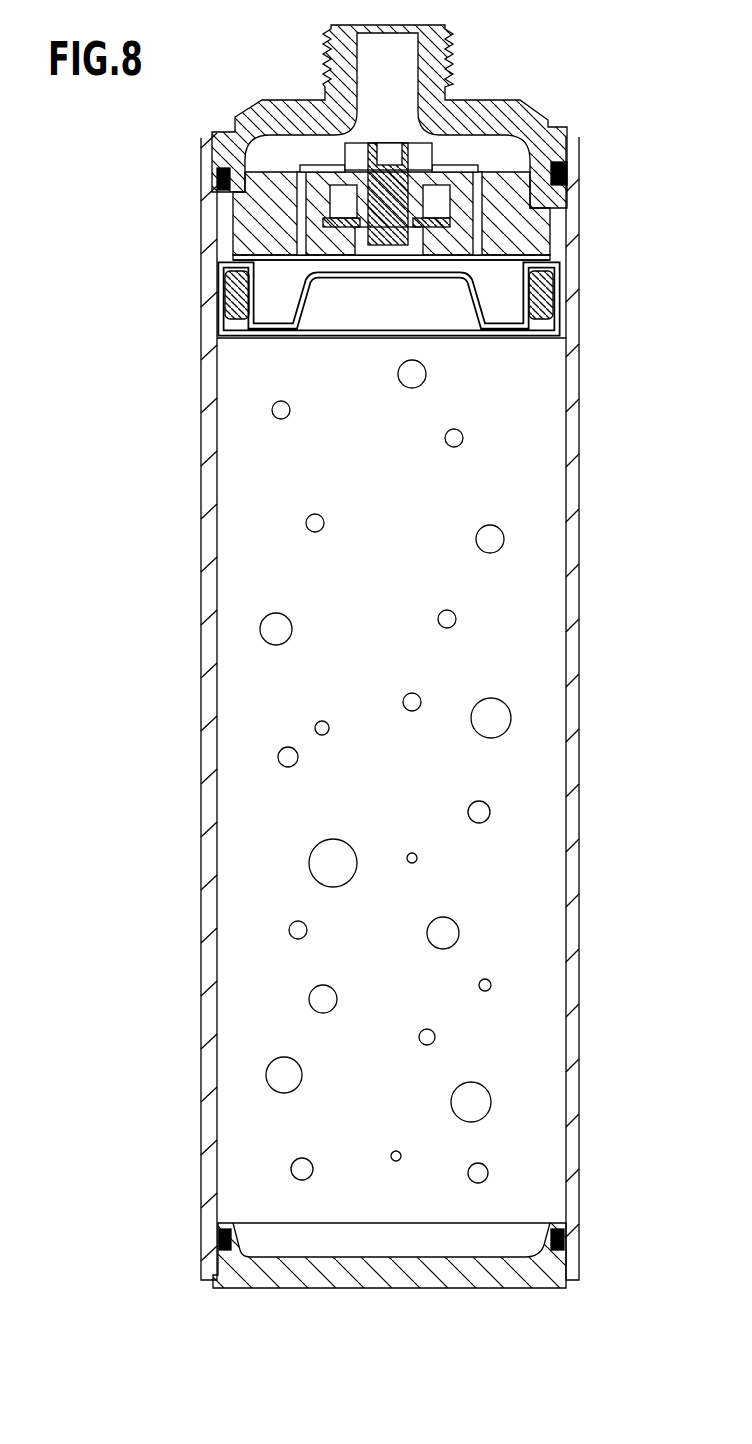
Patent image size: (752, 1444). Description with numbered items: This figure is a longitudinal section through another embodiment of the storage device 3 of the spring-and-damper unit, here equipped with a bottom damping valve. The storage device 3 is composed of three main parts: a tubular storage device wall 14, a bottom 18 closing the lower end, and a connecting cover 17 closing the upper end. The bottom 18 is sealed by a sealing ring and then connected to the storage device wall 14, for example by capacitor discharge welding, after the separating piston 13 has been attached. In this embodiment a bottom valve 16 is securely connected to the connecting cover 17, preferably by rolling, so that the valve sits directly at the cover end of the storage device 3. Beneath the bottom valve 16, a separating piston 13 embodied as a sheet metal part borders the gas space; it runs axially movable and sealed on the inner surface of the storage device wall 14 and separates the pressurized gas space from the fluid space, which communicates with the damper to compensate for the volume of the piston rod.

The storage device 3 is at (182, 654).
The separating piston 13 is at (480, 303).
The storage device wall 14 is at (573, 840).
The bottom valve 16 is at (510, 220).
The connecting cover 17 is at (567, 130).
The bottom 18 is at (533, 1277).